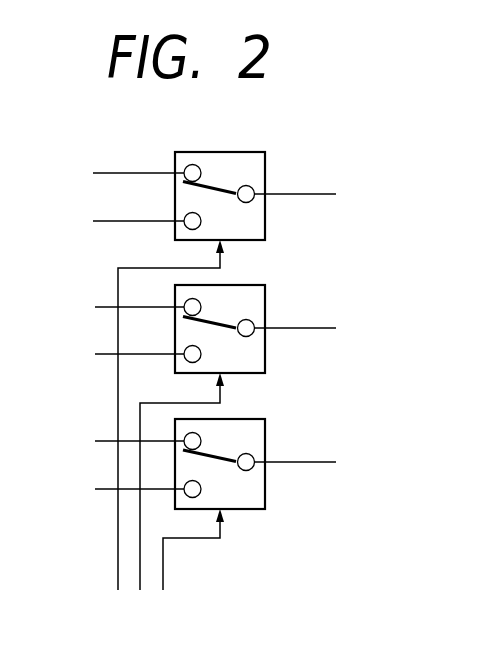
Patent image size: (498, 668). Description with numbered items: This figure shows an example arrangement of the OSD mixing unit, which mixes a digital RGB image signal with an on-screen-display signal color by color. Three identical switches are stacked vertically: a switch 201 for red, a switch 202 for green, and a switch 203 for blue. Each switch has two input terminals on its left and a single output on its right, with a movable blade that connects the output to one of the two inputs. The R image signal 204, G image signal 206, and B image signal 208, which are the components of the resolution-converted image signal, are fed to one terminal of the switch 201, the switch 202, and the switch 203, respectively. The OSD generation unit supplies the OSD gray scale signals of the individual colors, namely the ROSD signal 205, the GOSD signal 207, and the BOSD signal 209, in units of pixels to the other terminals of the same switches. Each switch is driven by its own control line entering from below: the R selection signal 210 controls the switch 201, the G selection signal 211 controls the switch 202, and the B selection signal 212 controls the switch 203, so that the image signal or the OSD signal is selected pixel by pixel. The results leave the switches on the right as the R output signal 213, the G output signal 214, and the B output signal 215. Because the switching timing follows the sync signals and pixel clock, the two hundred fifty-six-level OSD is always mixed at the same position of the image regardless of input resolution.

The switch 201 is at (223, 178).
The switch 202 is at (223, 312).
The switch 203 is at (223, 445).
The R image signal 204 is at (108, 172).
The ROSD signal 205 is at (108, 220).
The G image signal 206 is at (107, 306).
The GOSD signal 207 is at (107, 353).
The B image signal 208 is at (107, 440).
The BOSD signal 209 is at (107, 488).
The R selection signal 210 is at (117, 560).
The G selection signal 211 is at (138, 568).
The B selection signal 212 is at (163, 572).
The R output signal 213 is at (308, 194).
The G output signal 214 is at (310, 328).
The B output signal 215 is at (310, 462).